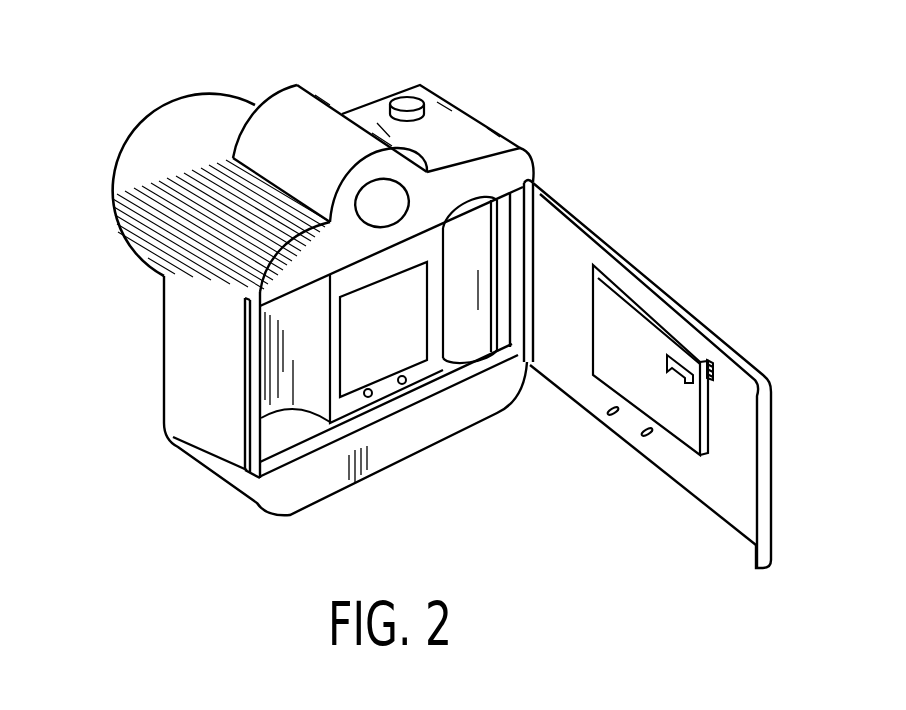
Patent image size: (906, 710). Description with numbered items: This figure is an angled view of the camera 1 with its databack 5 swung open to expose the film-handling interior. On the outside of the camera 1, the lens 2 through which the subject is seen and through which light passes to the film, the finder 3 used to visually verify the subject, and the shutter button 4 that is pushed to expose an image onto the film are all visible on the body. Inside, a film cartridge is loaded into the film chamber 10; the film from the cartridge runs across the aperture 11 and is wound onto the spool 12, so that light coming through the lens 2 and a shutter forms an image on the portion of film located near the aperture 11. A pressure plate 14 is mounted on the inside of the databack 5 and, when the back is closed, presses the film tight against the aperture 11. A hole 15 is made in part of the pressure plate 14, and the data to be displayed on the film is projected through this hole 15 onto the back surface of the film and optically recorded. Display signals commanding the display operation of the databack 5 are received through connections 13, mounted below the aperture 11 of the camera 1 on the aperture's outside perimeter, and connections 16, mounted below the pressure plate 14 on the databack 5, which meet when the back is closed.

The camera 1 is at (188, 405).
The lens 2 is at (133, 157).
The finder 3 is at (368, 200).
The shutter button 4 is at (407, 97).
The databack 5 is at (560, 233).
The film chamber 10 is at (283, 358).
The aperture 11 is at (360, 325).
The spool 12 is at (472, 247).
The connections 13 is at (402, 384).
The pressure plate 14 is at (627, 317).
The hole 15 is at (677, 360).
The connections 16 is at (645, 433).